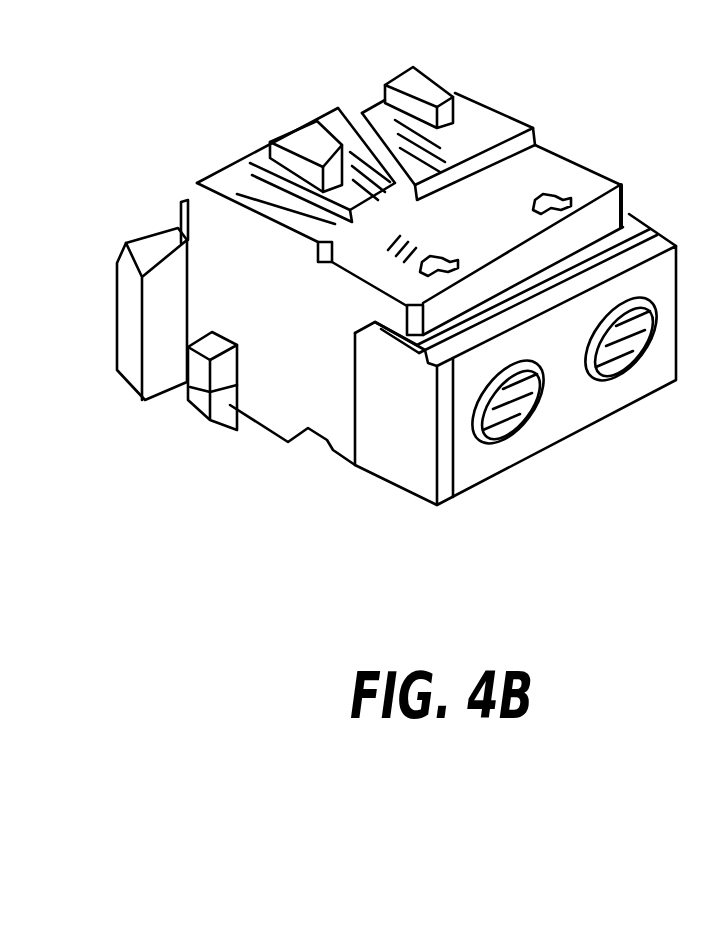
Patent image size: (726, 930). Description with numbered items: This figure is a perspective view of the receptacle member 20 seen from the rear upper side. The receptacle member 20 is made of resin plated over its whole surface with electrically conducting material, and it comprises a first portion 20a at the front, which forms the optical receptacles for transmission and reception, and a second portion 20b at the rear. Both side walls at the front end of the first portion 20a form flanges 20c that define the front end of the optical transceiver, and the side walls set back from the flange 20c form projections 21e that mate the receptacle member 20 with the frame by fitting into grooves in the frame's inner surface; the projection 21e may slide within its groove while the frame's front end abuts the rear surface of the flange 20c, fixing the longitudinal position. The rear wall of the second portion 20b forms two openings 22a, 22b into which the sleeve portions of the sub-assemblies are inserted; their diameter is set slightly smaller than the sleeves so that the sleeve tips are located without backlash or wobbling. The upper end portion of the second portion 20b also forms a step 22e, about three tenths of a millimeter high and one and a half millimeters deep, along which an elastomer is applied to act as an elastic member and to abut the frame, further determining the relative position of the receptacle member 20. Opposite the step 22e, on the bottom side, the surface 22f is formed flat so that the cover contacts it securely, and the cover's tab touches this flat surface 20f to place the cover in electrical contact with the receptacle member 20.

The receptacle member 20 is at (134, 107).
The first portion 20a is at (295, 527).
The second portion 20b is at (33, 413).
The flange 20c is at (122, 259).
The flat surface 20f is at (221, 242).
The projection 21e is at (191, 392).
The opening 22a is at (617, 347).
The opening 22b is at (507, 410).
The step 22e is at (657, 243).
The surface opposite to the step 22f is at (421, 501).